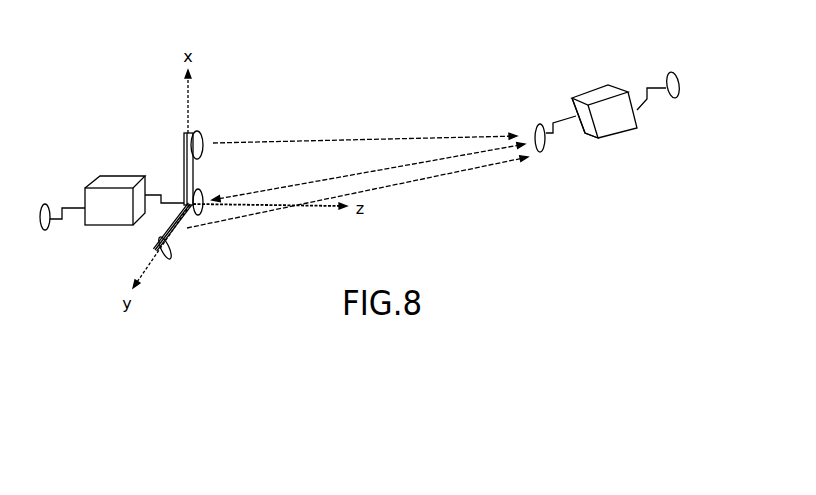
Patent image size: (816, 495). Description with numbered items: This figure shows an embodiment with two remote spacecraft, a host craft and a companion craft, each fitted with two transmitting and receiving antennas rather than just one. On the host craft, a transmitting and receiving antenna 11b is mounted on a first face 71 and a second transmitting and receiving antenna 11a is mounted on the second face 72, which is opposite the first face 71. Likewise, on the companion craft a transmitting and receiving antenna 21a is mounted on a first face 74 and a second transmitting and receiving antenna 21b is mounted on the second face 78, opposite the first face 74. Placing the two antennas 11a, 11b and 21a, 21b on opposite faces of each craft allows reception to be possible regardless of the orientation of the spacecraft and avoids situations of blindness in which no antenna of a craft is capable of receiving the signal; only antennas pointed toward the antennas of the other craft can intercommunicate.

The transmitting and receiving antenna 11a is at (203, 207).
The transmitting and receiving antenna 11b is at (45, 204).
The first face 71 is at (147, 184).
The second face 72 is at (85, 216).
The transmitting and receiving antenna 21a is at (543, 152).
The transmitting and receiving antenna 21b is at (672, 72).
The first face 74 is at (640, 118).
The second face 78 is at (585, 128).